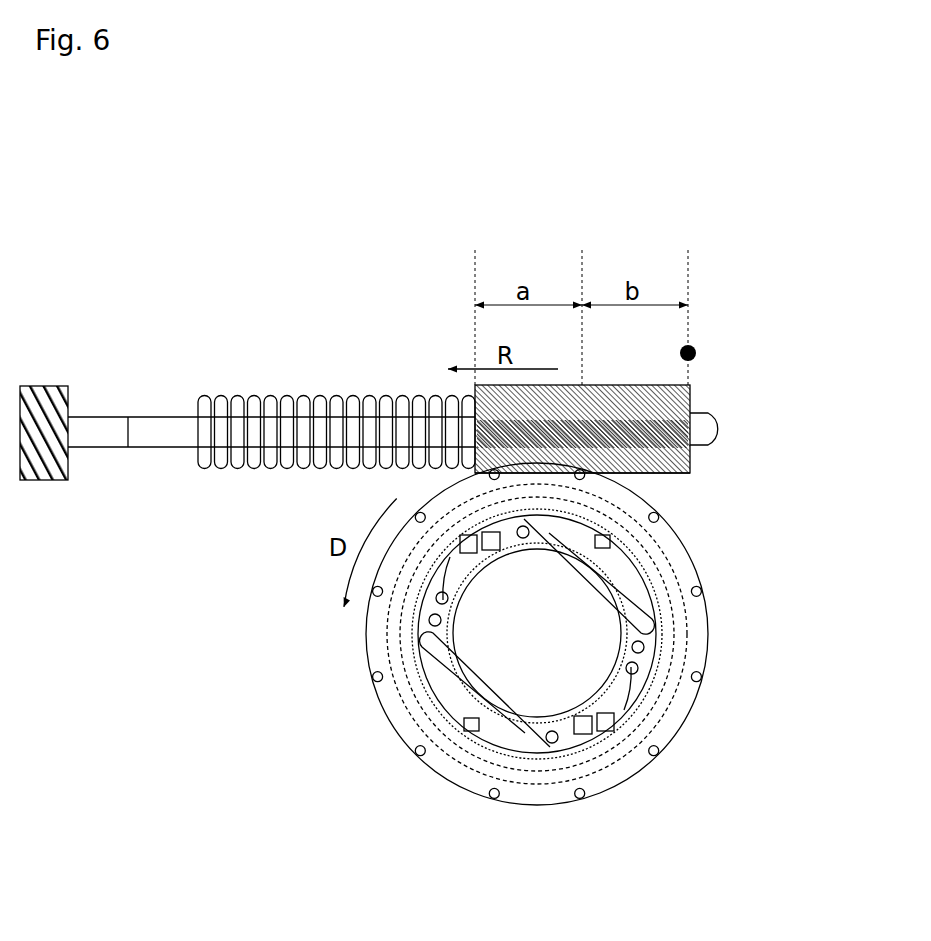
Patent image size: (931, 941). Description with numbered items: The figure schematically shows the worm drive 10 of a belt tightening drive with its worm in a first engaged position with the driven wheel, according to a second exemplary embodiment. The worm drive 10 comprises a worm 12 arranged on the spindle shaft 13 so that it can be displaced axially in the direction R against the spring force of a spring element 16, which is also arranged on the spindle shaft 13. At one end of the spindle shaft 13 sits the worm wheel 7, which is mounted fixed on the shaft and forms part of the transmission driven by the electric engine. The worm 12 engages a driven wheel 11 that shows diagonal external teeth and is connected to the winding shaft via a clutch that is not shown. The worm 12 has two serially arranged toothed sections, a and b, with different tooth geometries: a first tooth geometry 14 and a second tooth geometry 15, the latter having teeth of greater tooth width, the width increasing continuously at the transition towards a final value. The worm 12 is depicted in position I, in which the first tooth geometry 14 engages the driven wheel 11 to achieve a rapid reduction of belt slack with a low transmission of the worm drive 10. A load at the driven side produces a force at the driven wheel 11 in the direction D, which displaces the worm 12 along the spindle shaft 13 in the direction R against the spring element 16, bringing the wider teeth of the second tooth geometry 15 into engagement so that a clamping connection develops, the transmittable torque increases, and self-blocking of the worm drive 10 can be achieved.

The worm wheel 7 is at (47, 383).
The spring element 16 is at (290, 397).
The first tooth geometry 14 is at (488, 382).
The second tooth geometry 15 is at (613, 385).
The spindle shaft 13 is at (715, 408).
The worm 12 is at (638, 476).
The worm drive 10 is at (614, 625).
The driven wheel 11 is at (367, 643).
The position I is at (736, 302).